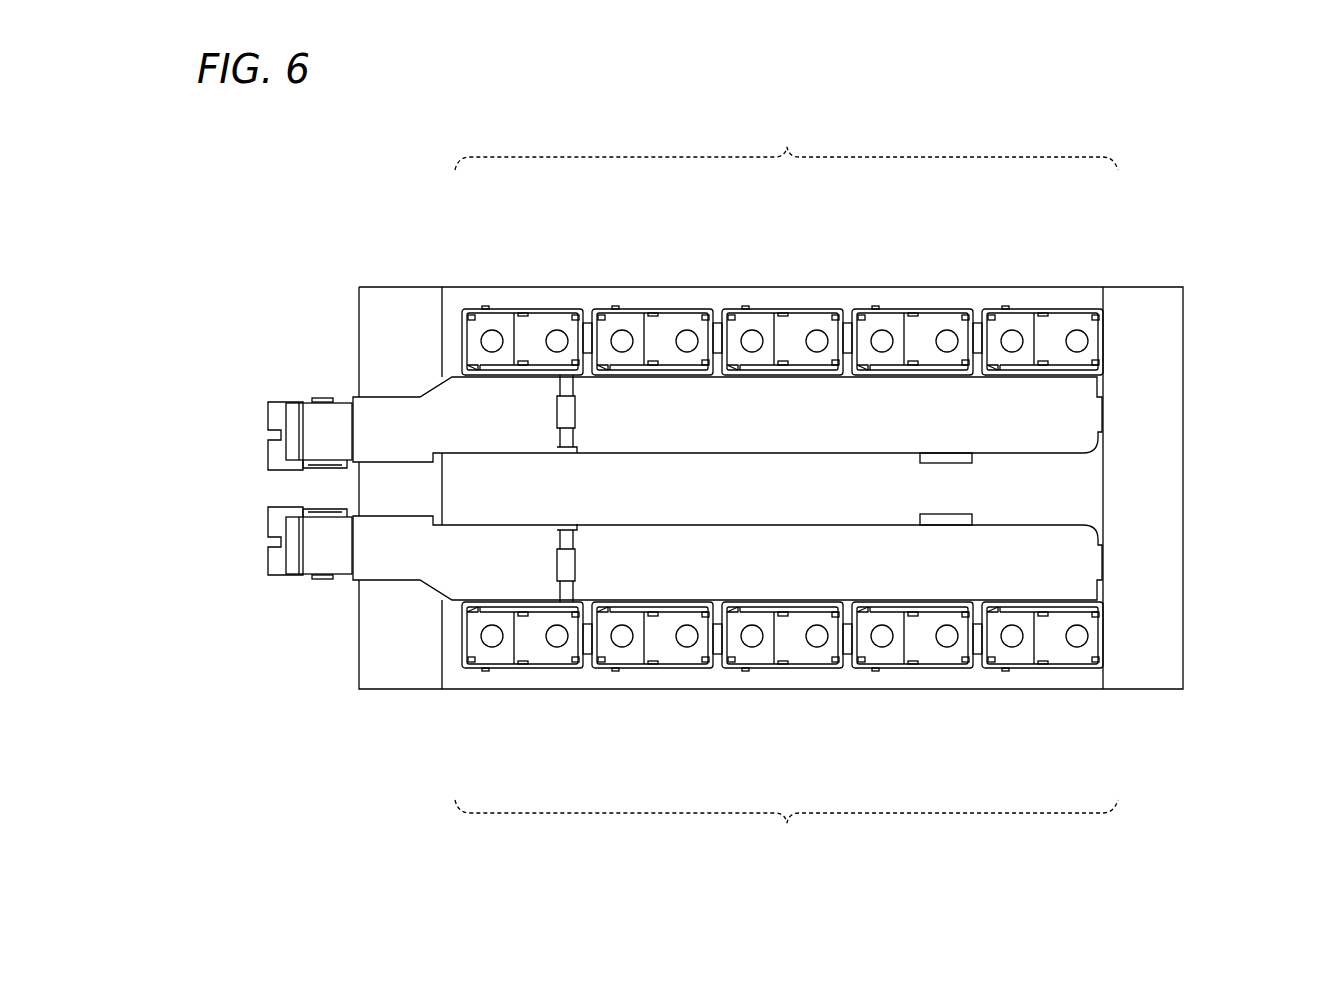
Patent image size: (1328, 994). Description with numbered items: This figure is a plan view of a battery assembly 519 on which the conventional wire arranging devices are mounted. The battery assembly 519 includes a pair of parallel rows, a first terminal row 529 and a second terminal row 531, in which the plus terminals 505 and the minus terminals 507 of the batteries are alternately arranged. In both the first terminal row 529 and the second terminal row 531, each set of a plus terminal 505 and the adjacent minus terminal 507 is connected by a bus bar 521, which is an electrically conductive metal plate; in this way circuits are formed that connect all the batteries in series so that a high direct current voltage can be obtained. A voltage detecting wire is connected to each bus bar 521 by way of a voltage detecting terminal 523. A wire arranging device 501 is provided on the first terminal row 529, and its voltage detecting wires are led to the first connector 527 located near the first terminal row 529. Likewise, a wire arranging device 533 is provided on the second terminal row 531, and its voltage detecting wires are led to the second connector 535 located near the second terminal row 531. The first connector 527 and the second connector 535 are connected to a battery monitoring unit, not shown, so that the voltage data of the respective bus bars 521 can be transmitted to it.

The wire arranging device 501 is at (1080, 519).
The plus terminal 505 is at (557, 306).
The minus terminal 507 is at (483, 306).
The battery assembly 519 is at (1195, 310).
The bus bar 521 is at (910, 313).
The voltage detecting terminal 523 is at (738, 306).
The first connector 527 is at (268, 536).
The first terminal row 529 is at (786, 830).
The second terminal row 531 is at (786, 144).
The wire arranging device 533 is at (1125, 404).
The second connector 535 is at (268, 424).